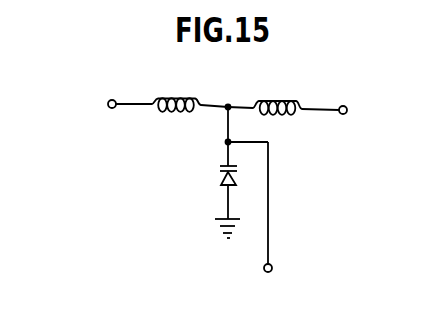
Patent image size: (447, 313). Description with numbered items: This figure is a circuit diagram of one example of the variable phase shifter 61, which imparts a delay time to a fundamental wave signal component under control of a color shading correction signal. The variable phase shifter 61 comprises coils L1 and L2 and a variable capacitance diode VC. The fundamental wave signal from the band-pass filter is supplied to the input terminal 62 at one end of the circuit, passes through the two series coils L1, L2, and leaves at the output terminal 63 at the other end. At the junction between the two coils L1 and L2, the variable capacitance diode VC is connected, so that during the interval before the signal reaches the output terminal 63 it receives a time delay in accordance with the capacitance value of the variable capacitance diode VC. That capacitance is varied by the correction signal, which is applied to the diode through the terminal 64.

The variable phase shifter 61 is at (230, 68).
The input terminal 62 is at (109, 101).
The output terminal 63 is at (346, 107).
The terminal 64 is at (272, 270).
The coil L1 is at (176, 95).
The coil L2 is at (277, 98).
The variable capacitance diode VC is at (218, 183).